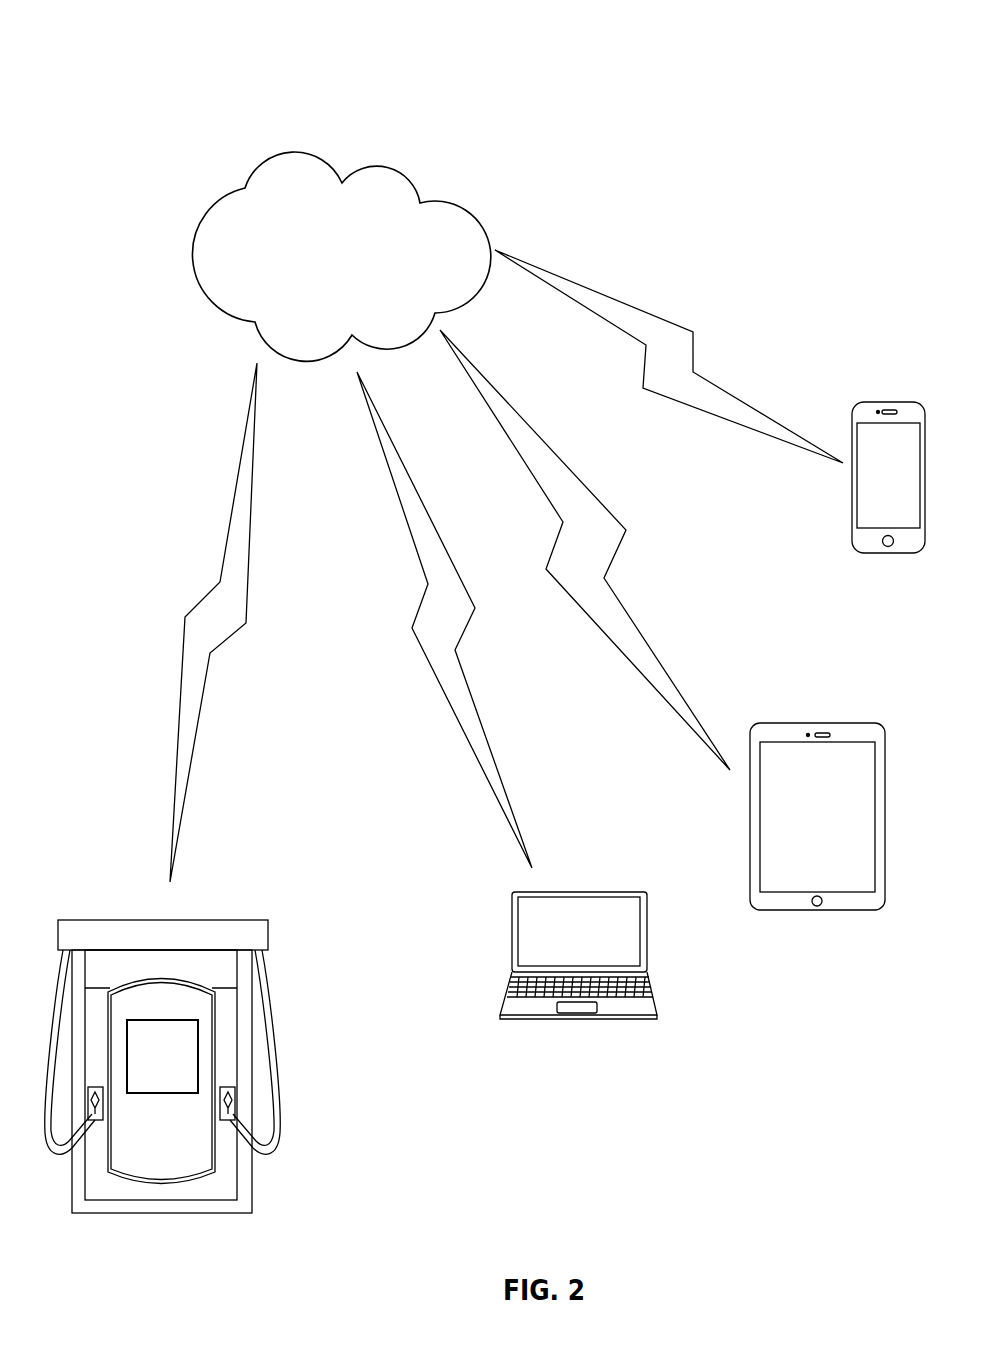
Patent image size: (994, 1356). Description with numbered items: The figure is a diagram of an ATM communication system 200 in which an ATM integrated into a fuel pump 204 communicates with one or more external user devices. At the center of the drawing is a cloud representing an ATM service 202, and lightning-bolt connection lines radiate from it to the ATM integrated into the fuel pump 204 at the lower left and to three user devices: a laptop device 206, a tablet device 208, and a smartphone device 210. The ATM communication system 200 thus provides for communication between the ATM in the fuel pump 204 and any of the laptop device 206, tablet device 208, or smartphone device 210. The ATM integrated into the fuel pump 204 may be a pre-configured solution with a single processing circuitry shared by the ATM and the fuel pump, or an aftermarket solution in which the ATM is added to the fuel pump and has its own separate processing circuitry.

The ATM communication system 200 is at (817, 82).
The ATM service cloud 202 is at (208, 205).
The ATM integrated into a fuel pump 204 is at (133, 920).
The laptop device 206 is at (512, 925).
The tablet device 208 is at (780, 723).
The smartphone device 210 is at (867, 402).